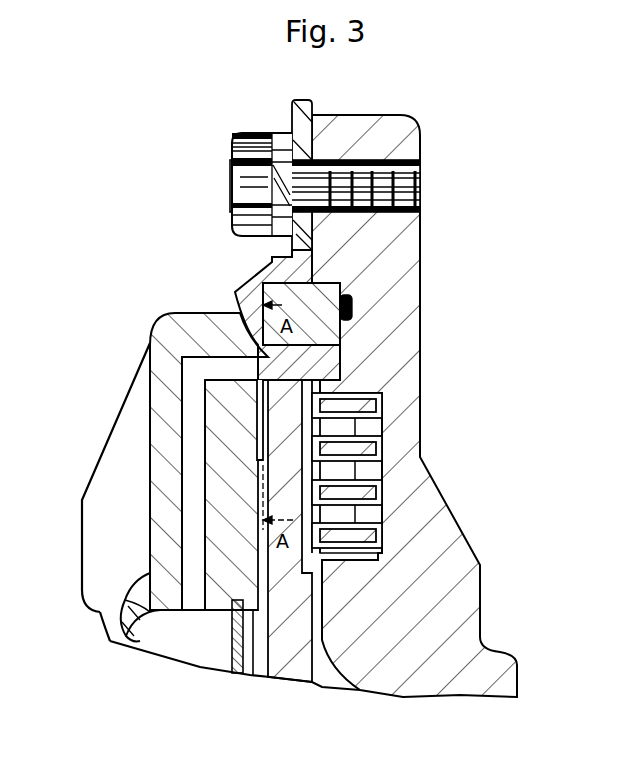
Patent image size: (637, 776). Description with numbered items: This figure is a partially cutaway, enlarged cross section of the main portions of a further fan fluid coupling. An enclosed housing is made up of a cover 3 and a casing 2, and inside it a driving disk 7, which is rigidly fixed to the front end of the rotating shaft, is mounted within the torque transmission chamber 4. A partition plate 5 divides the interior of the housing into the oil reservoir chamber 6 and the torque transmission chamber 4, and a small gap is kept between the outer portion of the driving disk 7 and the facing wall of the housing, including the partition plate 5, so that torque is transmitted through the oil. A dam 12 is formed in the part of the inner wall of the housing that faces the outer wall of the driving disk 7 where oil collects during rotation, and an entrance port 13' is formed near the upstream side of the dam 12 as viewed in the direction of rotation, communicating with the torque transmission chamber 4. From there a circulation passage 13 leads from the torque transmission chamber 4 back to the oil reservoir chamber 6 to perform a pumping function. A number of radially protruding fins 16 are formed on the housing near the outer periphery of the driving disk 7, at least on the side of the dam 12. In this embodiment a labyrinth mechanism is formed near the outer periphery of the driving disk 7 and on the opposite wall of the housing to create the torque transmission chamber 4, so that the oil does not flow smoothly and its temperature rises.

The casing 2 is at (398, 658).
The cover 3 is at (133, 600).
The torque transmission chamber 4 is at (382, 495).
The partition plate 5 is at (233, 643).
The oil reservoir chamber 6 is at (158, 628).
The driving disk 7 is at (287, 660).
The dam 12 is at (237, 302).
The circulation passage 13 is at (155, 477).
The entrance port 13' is at (209, 441).
The fins 16 is at (257, 430).